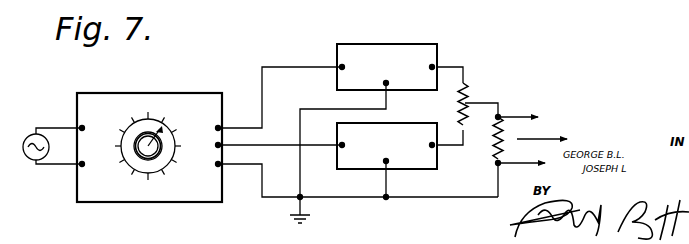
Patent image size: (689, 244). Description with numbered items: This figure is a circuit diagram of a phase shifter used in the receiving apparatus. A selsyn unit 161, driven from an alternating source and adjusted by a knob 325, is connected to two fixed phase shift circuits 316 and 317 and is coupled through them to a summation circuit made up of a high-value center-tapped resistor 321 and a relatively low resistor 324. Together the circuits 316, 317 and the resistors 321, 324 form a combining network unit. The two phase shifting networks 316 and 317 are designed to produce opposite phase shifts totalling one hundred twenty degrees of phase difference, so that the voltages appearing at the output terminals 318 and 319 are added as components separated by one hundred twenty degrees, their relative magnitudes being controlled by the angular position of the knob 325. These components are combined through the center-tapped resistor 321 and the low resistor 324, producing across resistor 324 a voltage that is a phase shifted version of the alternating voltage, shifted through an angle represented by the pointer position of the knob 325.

The selsyn unit 161 is at (190, 93).
The knob 325 is at (142, 157).
The fixed phase shift circuit 316 is at (426, 44).
The fixed phase shift circuit 317 is at (406, 123).
The terminal 318 is at (436, 66).
The terminal 319 is at (431, 149).
The high-value center-tapped resistor 321 is at (469, 101).
The low resistor 324 is at (493, 141).